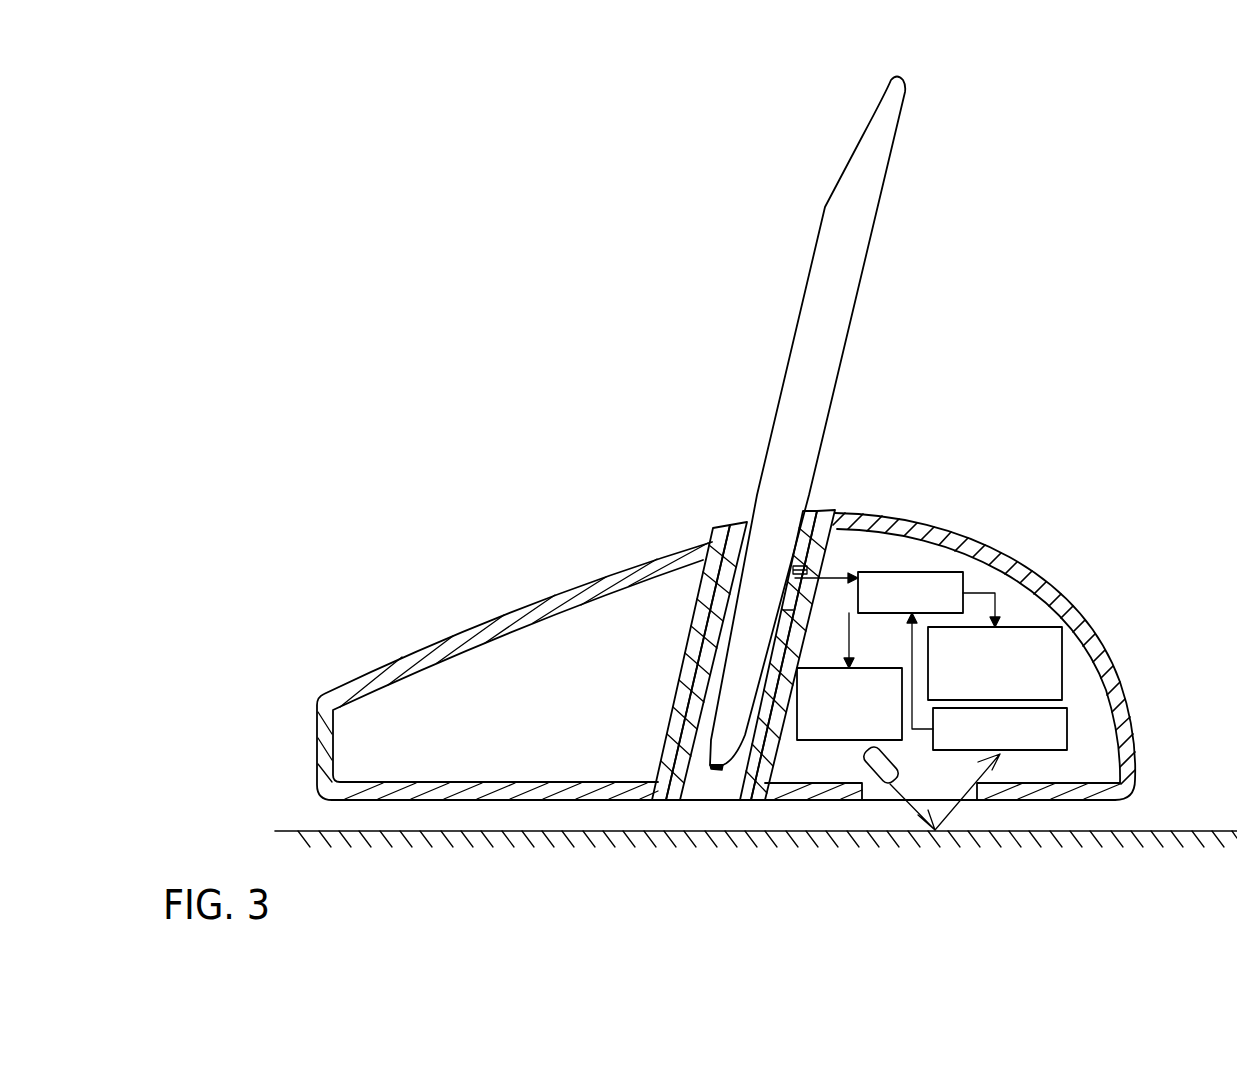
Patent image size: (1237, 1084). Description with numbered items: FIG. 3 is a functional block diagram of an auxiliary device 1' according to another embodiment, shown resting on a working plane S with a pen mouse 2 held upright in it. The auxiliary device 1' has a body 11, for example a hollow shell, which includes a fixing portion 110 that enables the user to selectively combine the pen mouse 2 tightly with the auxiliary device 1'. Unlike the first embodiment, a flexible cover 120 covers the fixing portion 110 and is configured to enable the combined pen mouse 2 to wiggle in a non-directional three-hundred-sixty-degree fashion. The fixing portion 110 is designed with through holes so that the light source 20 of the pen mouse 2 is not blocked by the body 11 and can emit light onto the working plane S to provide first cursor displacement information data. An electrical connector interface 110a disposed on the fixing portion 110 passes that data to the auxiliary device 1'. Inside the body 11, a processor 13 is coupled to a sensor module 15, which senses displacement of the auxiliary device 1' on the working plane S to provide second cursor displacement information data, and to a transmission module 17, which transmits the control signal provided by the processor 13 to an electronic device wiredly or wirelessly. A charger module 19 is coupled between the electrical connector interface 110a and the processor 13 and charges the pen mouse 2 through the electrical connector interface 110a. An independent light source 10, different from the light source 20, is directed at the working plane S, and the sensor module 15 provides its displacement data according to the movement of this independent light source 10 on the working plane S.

The auxiliary device 1' is at (718, 655).
The pen mouse 2 is at (836, 385).
The working plane S is at (312, 830).
The independent light source 10 is at (877, 768).
The body 11 is at (947, 540).
The processor 13 is at (908, 570).
The sensor module 15 is at (1067, 727).
The transmission module 17 is at (1062, 660).
The charger module 19 is at (818, 742).
The light source 20 is at (711, 772).
The fixing portion 110 is at (803, 508).
The electrical connector interface 110a is at (838, 560).
The flexible cover 120 is at (825, 508).